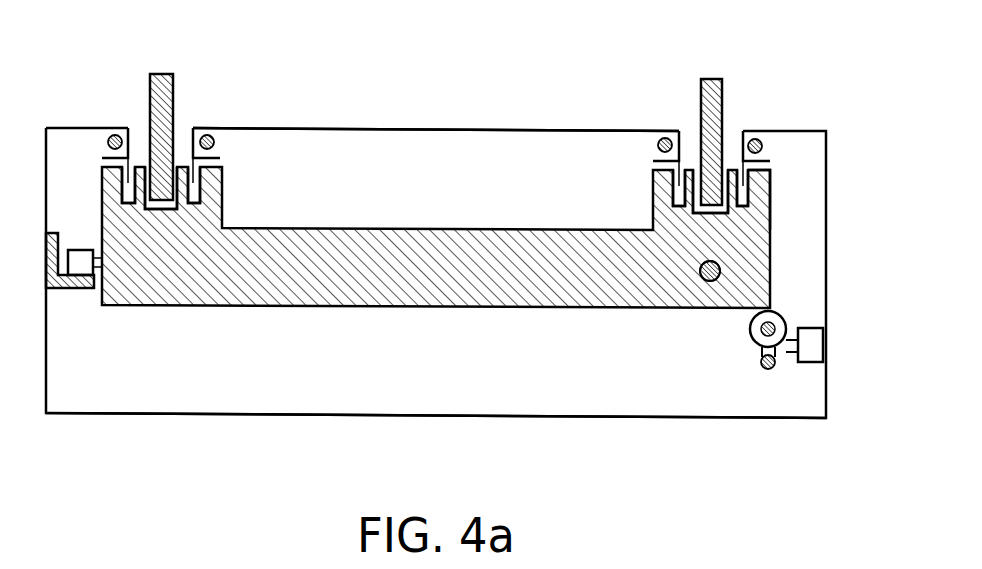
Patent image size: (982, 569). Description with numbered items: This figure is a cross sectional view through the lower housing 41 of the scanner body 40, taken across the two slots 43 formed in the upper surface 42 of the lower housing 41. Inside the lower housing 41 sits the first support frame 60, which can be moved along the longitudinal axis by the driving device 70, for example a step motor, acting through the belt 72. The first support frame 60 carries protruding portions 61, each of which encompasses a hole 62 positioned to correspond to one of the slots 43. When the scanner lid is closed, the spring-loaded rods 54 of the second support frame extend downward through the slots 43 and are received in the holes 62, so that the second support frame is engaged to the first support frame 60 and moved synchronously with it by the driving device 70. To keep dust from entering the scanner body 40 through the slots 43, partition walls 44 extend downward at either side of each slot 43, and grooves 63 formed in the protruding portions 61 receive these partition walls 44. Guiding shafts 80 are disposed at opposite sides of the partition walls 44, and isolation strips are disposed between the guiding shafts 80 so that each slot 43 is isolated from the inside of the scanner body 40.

The scanner body 40 is at (840, 199).
The lower housing 41 is at (558, 417).
The upper surface 42 is at (437, 129).
The slot 43 is at (182, 143).
The partition wall 44 is at (128, 181).
The rod 54 is at (162, 85).
The first support frame 60 is at (472, 309).
The protruding portion 61 is at (770, 211).
The hole 62 is at (175, 182).
The groove 63 is at (128, 183).
The driving device 70 is at (812, 353).
The belt 72 is at (768, 370).
The guiding shaft 80 is at (113, 134).